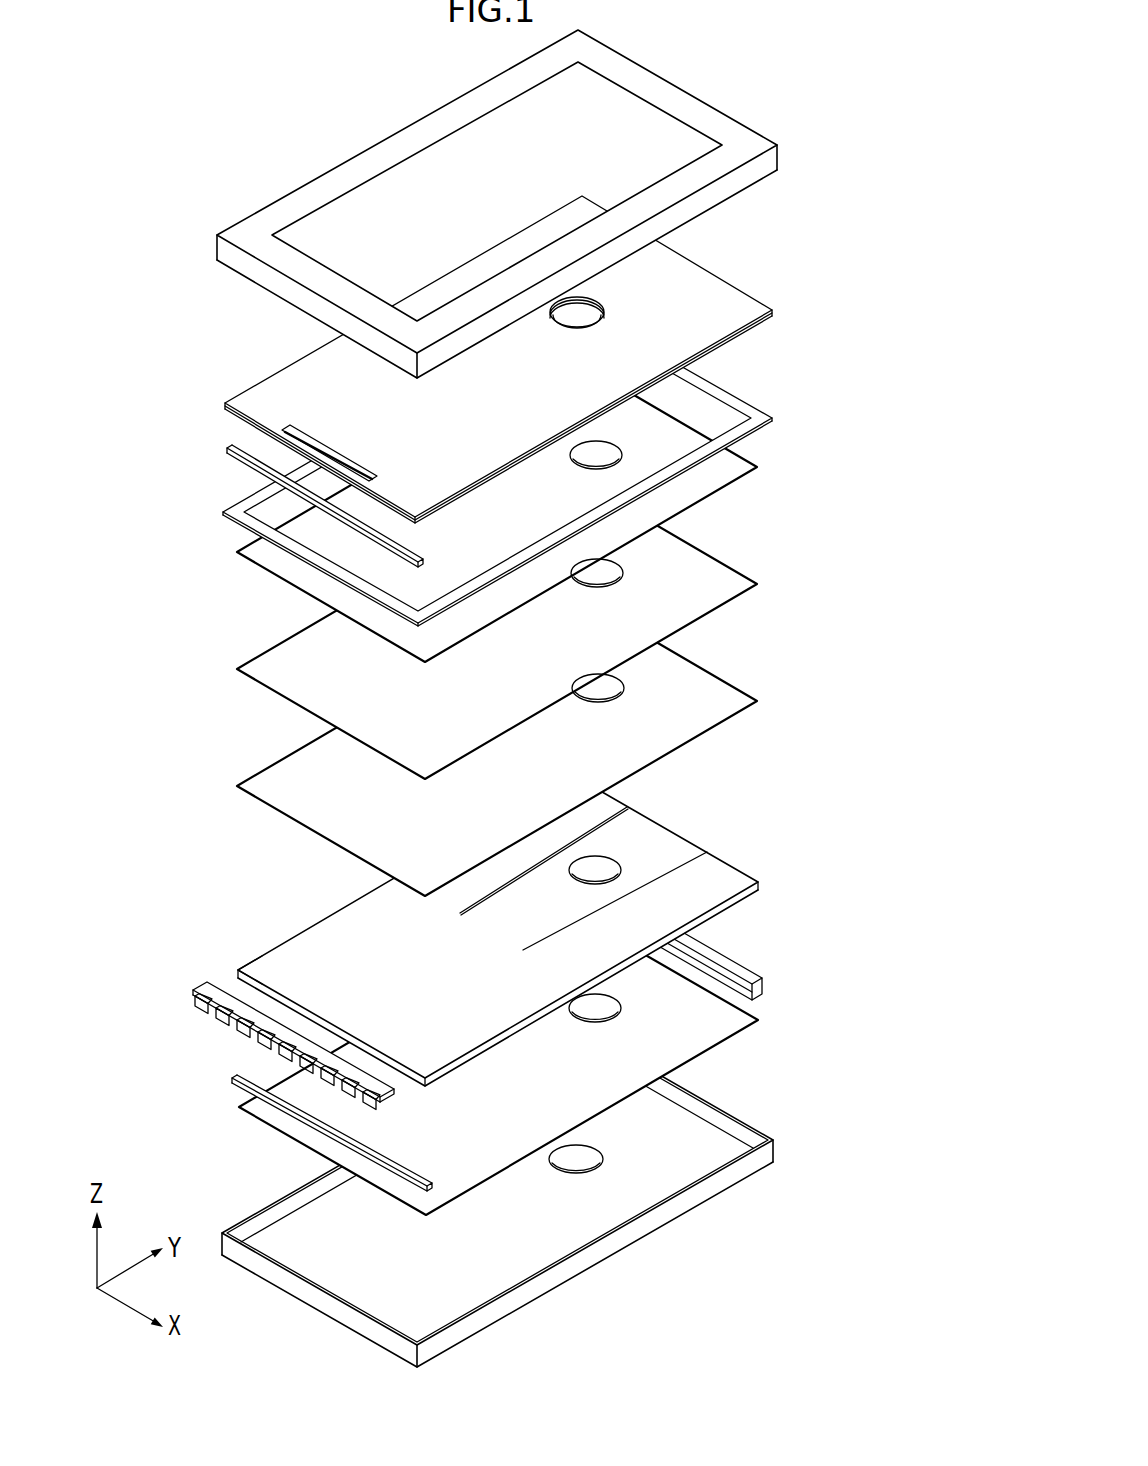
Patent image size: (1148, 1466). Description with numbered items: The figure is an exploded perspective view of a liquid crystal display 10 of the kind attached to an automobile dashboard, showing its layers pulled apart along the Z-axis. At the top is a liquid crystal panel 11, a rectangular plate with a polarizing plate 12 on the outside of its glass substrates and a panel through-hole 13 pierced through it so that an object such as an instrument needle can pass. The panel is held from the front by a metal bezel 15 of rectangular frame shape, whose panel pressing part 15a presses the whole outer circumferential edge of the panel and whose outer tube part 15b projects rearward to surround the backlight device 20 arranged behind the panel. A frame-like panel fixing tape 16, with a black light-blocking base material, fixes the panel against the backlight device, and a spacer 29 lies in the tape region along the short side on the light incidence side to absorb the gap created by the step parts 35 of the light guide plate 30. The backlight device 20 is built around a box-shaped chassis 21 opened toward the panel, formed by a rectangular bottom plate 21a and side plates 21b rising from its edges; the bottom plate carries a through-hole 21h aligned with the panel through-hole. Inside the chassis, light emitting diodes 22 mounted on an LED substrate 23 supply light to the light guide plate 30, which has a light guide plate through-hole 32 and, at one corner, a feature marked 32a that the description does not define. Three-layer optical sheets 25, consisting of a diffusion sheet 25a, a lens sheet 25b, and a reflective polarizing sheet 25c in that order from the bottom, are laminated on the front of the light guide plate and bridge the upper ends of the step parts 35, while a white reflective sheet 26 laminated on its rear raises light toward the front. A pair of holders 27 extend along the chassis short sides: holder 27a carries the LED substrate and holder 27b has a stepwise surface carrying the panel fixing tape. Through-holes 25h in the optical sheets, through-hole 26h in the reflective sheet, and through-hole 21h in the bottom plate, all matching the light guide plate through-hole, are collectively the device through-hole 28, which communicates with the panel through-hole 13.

The liquid crystal display 10 is at (140, 1204).
The liquid crystal panel 11 is at (535, 359).
The polarizing plate 12 is at (708, 297).
The panel through-hole 13 is at (583, 317).
The bezel 15 is at (534, 203).
The panel pressing part 15a is at (728, 132).
The outer tube part 15b is at (765, 165).
The panel fixing tape 16 is at (755, 413).
The backlight device 20 is at (868, 1235).
The chassis 21 is at (519, 1197).
The bottom plate 21a is at (483, 1283).
The side plates 21b is at (587, 1257).
The through-hole 21h is at (585, 1162).
The light emitting diodes 22 is at (243, 1027).
The LED substrate 23 is at (272, 1022).
The optical sheets 25 is at (555, 626).
The diffusion sheet 25a is at (703, 673).
The lens sheet 25b is at (705, 573).
The reflective polarizing sheet 25c is at (815, 622).
The through-holes 25h is at (578, 684).
The reflective sheet 26 is at (695, 1032).
The through-hole 26h is at (617, 1002).
The holders 27 is at (496, 1052).
The holder 27a is at (287, 1107).
The holder 27b is at (743, 965).
The device through-hole 28 is at (499, 873).
The spacer 29 is at (232, 462).
The light guide plate 30 is at (521, 924).
The light guide plate through-hole 32 is at (617, 866).
The corner portion of light guide plate 32a is at (258, 992).
The step parts 35 is at (630, 809).